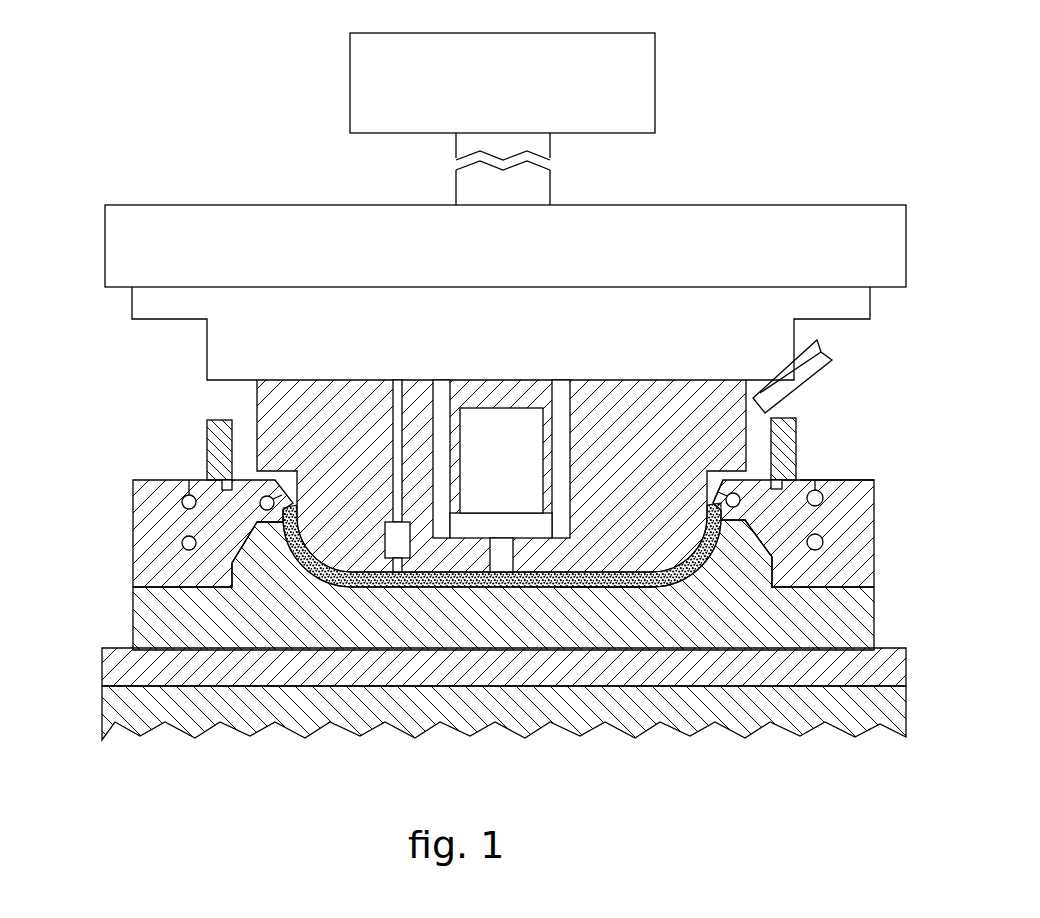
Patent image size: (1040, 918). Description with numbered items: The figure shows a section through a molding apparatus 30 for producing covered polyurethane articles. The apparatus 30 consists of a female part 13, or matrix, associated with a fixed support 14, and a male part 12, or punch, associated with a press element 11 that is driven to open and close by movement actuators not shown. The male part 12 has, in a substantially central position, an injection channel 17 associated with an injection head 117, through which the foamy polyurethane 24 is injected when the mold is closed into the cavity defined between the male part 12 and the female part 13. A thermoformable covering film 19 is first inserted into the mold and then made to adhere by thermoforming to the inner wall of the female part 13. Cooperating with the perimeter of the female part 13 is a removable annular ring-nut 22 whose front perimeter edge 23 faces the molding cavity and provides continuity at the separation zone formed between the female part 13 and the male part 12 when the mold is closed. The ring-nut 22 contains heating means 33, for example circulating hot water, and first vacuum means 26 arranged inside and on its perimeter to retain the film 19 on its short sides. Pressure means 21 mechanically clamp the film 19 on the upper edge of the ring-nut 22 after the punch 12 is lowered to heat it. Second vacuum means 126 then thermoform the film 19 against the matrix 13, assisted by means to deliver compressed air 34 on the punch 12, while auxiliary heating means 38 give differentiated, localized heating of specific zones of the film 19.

The press element 11 is at (650, 88).
The male part 12 is at (272, 407).
The female part 13 is at (858, 612).
The fixed support 14 is at (906, 668).
The injection channel 17 is at (500, 557).
The thermoformable covering film 19 is at (805, 478).
The pressure means 21 is at (218, 452).
The annular ring-nut 22 is at (877, 517).
The front perimeter edge 23 is at (708, 507).
The foamy polyurethane 24 is at (593, 587).
The first vacuum means 26 is at (848, 480).
The molding apparatus 30 is at (850, 163).
The heating means 33 is at (820, 540).
The means to deliver compressed air 34 is at (397, 587).
The auxiliary heating means 38 is at (827, 355).
The injection head 117 is at (502, 427).
The second vacuum means 126 is at (715, 497).